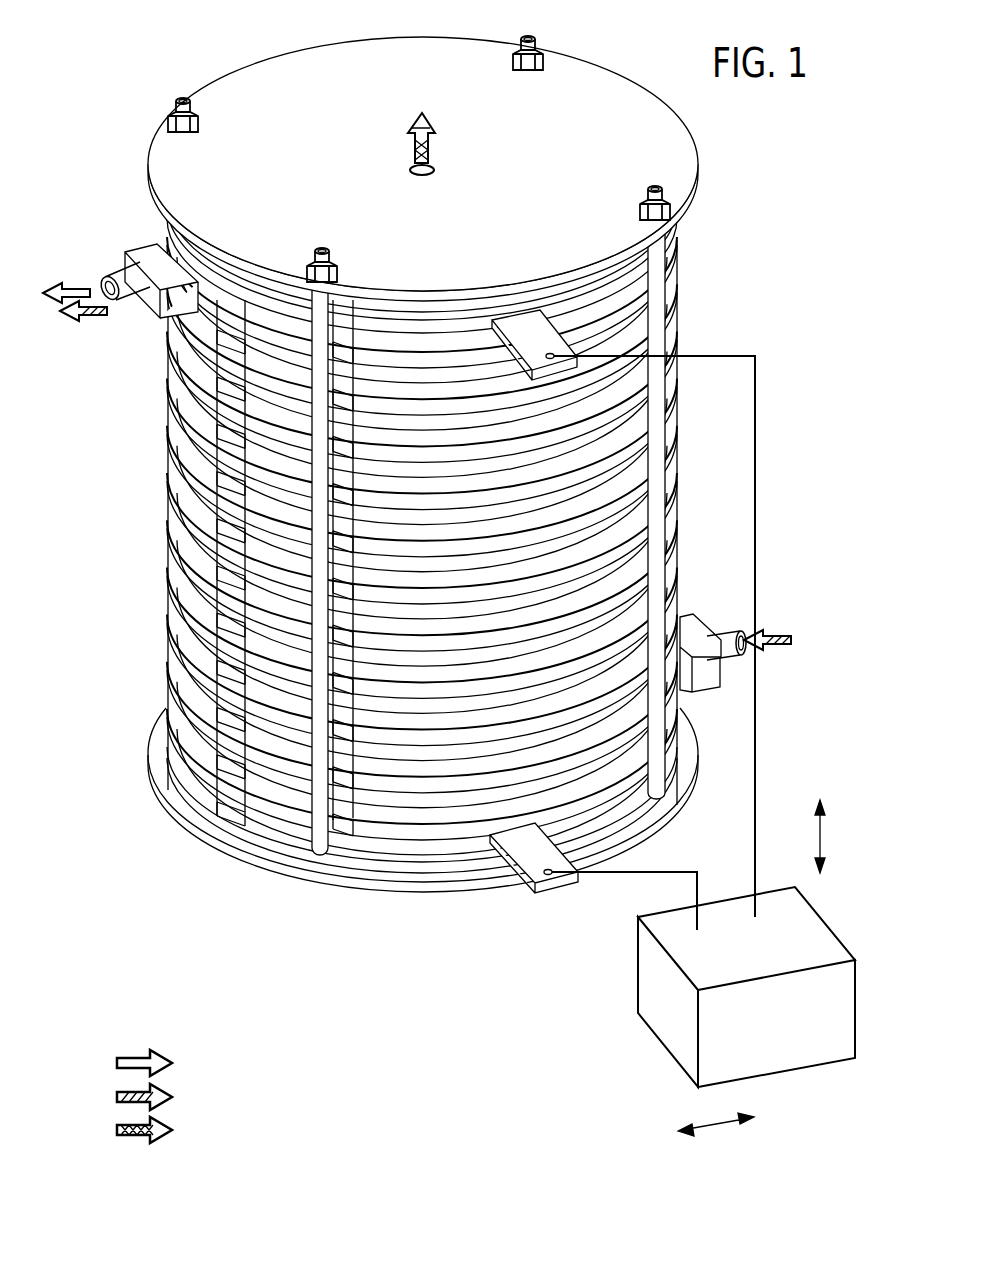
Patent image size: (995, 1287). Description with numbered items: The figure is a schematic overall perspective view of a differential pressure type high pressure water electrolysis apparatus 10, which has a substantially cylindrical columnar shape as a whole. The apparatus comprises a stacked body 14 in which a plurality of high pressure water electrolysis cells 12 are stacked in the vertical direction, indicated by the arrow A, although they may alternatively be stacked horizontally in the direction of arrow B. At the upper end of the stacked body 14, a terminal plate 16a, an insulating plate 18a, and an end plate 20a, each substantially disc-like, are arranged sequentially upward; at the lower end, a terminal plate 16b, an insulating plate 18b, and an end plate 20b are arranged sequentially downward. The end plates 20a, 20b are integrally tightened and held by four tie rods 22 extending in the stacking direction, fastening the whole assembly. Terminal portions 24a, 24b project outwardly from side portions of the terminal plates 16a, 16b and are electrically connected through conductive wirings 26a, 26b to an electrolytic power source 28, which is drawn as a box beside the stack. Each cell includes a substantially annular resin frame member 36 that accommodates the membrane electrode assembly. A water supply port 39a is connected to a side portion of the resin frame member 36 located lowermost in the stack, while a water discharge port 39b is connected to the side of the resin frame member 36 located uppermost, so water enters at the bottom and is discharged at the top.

The differential pressure type high pressure water electrolysis apparatus 10 is at (789, 131).
The high pressure water electrolysis cell 12 is at (181, 458).
The stacked body 14 is at (376, 546).
The terminal plate 16a is at (430, 330).
The terminal plate 16b is at (460, 845).
The insulating plate 18a is at (465, 318).
The insulating plate 18b is at (400, 860).
The end plate 20a is at (605, 78).
The end plate 20b is at (357, 884).
The tie rod 22 is at (318, 858).
The terminal portion 24a is at (520, 330).
The terminal portion 24b is at (545, 890).
The conductive wiring 26a is at (720, 356).
The conductive wiring 26b is at (602, 874).
The electrolytic power source 28 is at (668, 1030).
The resin frame member 36 is at (207, 305).
The water supply port 39a is at (722, 634).
The water discharge port 39b is at (118, 277).